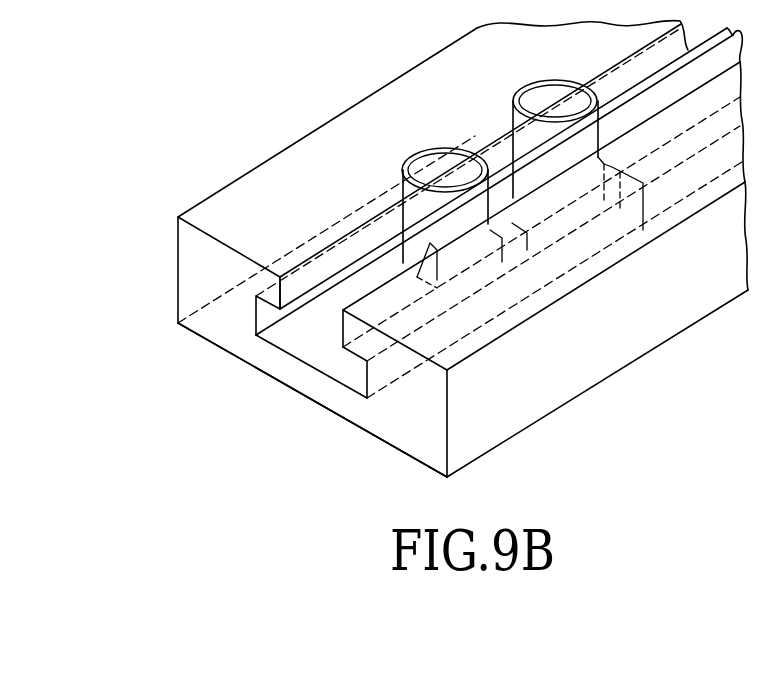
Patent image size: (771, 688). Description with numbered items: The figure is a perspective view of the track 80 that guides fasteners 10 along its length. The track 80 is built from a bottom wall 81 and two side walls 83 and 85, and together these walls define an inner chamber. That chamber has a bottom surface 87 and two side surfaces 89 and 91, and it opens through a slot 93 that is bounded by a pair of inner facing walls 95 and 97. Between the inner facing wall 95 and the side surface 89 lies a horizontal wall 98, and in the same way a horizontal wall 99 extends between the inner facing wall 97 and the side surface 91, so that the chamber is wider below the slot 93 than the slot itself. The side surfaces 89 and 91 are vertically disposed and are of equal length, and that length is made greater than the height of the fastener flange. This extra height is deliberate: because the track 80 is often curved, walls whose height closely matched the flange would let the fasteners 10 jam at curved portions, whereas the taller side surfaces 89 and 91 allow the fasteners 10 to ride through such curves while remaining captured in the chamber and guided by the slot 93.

The tubes 10 is at (503, 86).
The track 80 is at (176, 370).
The bottom wall 81 is at (313, 387).
The side wall 83 is at (190, 243).
The side wall 85 is at (433, 437).
The bottom surface 87 is at (318, 362).
The side surface 89 is at (262, 325).
The side surface 91 is at (367, 400).
The slot 93 is at (330, 312).
The inner facing wall 95 is at (305, 273).
The inner facing wall 97 is at (312, 358).
The horizontal wall 98 is at (262, 322).
The horizontal wall 99 is at (367, 387).